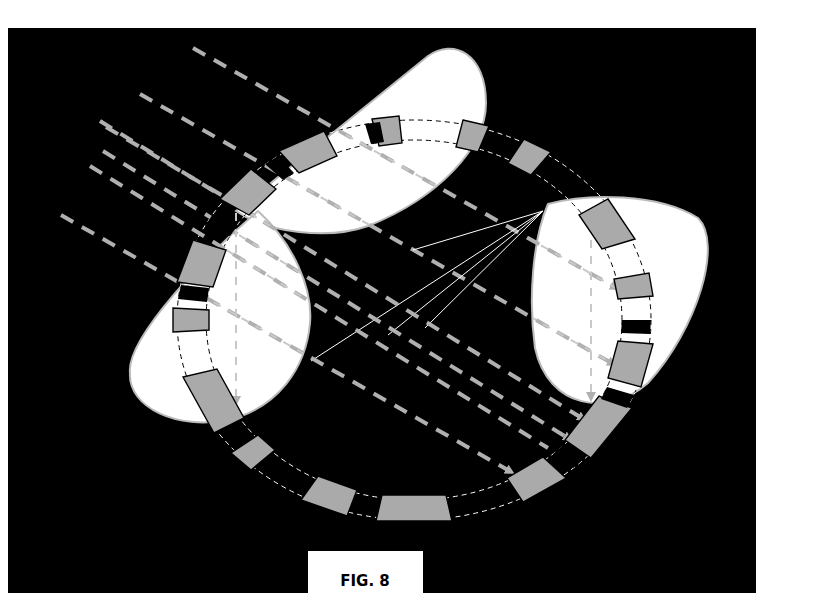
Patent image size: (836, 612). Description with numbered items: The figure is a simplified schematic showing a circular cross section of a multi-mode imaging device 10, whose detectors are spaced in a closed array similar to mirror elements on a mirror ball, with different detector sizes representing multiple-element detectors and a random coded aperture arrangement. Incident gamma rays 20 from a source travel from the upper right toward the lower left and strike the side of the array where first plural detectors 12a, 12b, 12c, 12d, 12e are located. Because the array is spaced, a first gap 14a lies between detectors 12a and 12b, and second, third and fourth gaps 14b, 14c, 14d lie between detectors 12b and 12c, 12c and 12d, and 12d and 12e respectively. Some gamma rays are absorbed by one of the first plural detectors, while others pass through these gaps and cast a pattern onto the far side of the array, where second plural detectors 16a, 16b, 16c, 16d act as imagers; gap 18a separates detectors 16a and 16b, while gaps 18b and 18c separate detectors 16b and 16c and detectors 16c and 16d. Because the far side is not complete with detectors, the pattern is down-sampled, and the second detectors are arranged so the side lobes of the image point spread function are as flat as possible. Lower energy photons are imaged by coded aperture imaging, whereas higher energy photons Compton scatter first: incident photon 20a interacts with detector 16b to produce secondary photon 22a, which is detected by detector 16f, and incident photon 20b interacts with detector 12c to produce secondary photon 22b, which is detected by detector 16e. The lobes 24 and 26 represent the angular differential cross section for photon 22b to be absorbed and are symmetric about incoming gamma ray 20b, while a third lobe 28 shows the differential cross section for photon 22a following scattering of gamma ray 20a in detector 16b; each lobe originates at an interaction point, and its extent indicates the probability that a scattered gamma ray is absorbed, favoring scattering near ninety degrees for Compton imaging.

The multi-mode imaging device 10 is at (382, 310).
The first plural detector 12a is at (178, 310).
The first plural detector 12b is at (197, 254).
The first plural detector 12c is at (240, 178).
The first plural detector 12d is at (303, 145).
The first plural detector 12e is at (384, 120).
The first gap 14a is at (183, 290).
The second gap 14b is at (213, 226).
The third gap 14c is at (280, 157).
The fourth gap 14d is at (353, 127).
The second plural detector 16a is at (525, 480).
The second plural detector 16b is at (600, 420).
The second plural detector 16c is at (627, 353).
The second plural detector 16d is at (632, 280).
The second plural detector 16e is at (205, 415).
The second plural detector 16f is at (602, 200).
The gap 18a is at (568, 452).
The gap 18b is at (625, 382).
The gap 18c is at (637, 308).
The incident gamma rays 20 is at (545, 196).
The incident photon 20a is at (127, 140).
The incident photon 20b is at (159, 146).
The secondary photon 22a is at (585, 277).
The secondary photon 22b is at (242, 337).
The lobe 24 is at (220, 316).
The lobe 26 is at (361, 141).
The third lobe 28 is at (620, 300).